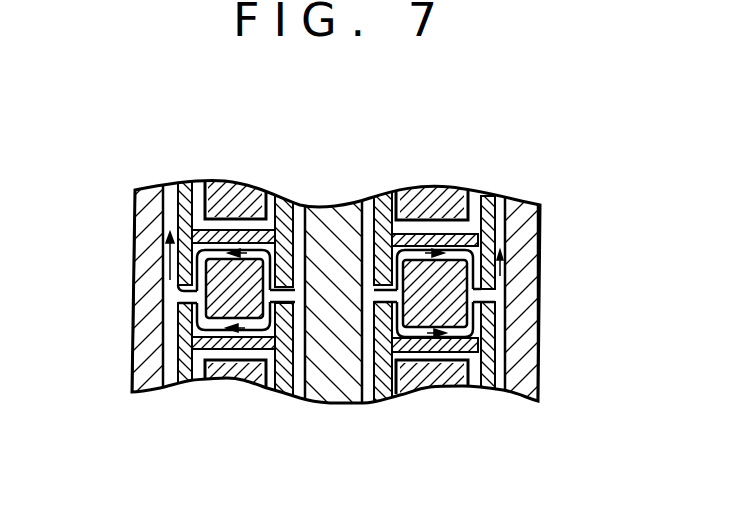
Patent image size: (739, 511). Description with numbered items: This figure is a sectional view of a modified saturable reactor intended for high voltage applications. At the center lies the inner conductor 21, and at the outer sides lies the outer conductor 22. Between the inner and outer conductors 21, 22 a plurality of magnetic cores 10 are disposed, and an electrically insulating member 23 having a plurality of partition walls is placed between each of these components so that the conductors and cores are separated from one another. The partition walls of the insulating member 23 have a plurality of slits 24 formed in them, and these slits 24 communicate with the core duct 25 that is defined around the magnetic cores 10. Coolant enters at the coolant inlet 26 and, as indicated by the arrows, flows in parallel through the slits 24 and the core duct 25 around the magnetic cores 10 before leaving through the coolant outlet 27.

The magnetic cores 10 is at (222, 277).
The inner conductor 21 is at (340, 205).
The outer conductor 22 is at (147, 325).
The electrically insulating member 23 is at (197, 224).
The slits 24 is at (170, 372).
The core duct 25 is at (468, 205).
The coolant inlet 26 is at (300, 200).
The coolant outlet 27 is at (172, 185).